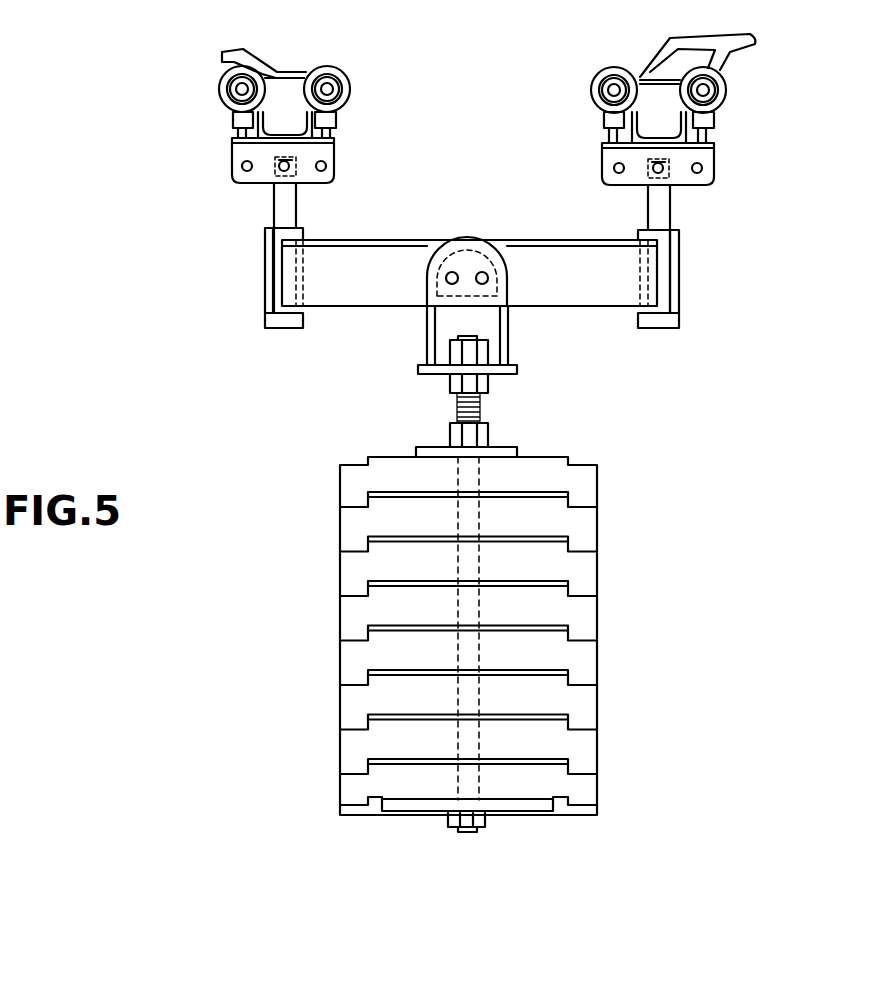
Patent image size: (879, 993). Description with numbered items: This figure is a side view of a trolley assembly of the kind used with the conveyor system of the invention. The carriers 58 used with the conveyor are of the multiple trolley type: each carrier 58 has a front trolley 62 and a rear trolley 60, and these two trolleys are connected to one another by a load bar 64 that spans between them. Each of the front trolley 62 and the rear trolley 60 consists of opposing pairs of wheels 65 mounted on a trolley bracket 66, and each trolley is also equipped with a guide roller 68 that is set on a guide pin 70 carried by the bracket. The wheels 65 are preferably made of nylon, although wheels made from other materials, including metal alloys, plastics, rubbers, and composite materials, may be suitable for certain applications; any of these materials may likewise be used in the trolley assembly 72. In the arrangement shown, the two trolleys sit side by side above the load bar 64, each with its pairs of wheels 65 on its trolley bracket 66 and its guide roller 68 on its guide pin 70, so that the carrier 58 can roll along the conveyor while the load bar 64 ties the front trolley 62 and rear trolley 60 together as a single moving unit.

The carrier 58 is at (208, 226).
The rear trolley 60 is at (738, 108).
The front trolley 62 is at (208, 120).
The load bar 64 is at (538, 240).
The wheels 65 is at (338, 78).
The trolley bracket 66 is at (330, 158).
The guide roller 68 is at (240, 120).
The guide pin 70 is at (238, 132).
The trolley assembly 72 is at (272, 72).